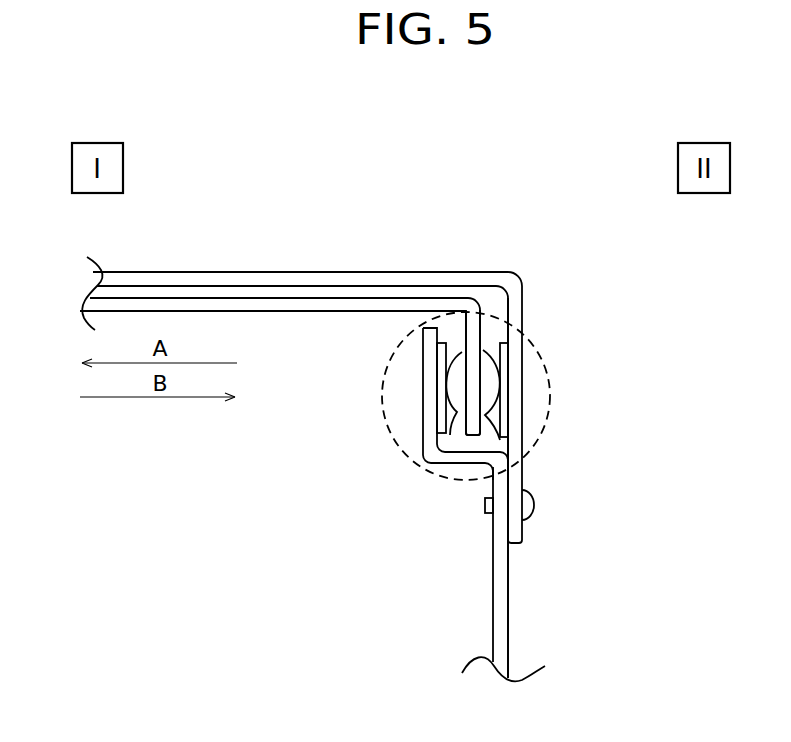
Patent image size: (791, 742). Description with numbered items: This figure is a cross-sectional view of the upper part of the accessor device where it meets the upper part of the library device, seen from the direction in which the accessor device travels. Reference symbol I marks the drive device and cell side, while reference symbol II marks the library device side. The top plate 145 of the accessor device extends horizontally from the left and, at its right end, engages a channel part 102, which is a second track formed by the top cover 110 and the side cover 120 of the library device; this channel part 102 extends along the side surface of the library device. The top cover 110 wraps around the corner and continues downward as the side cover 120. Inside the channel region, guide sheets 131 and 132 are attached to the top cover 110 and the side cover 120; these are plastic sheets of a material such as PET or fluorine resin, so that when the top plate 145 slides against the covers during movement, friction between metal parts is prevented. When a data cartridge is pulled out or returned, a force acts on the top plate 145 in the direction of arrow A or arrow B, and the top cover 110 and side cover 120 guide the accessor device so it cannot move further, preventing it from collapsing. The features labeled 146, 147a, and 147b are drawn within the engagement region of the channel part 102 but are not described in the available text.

The channel part 102 is at (533, 342).
The top cover 110 is at (427, 271).
The side cover 120 is at (508, 613).
The guide sheet 131 is at (504, 387).
The guide sheet 132 is at (437, 417).
The top plate 145 is at (178, 307).
The protrusion channel 146 is at (483, 318).
The first elastic part 147a is at (500, 440).
The second elastic part 147b is at (450, 435).